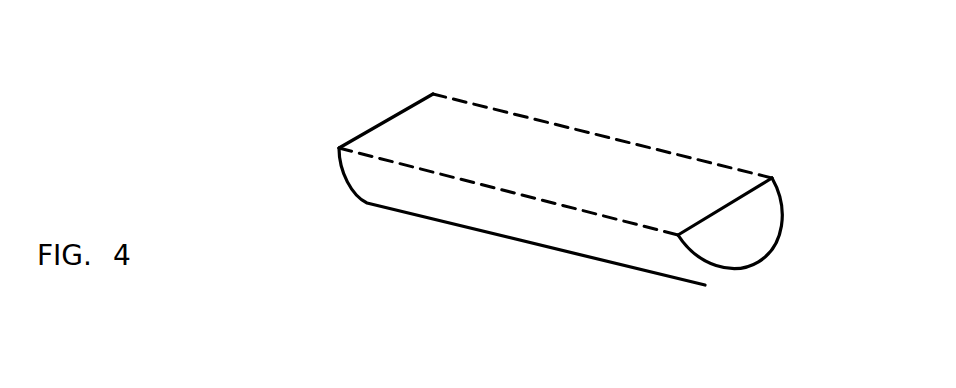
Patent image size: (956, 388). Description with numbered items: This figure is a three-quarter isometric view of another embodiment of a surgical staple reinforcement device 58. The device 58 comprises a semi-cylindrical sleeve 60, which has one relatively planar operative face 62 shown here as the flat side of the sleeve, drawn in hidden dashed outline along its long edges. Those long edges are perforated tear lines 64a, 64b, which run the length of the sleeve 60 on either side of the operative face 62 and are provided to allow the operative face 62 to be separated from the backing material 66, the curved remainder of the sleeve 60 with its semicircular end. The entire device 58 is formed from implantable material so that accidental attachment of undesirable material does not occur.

The reinforcement device 58 is at (576, 203).
The semi-cylindrical sleeve 60 is at (430, 198).
The operative face 62 is at (643, 178).
The perforated tear line 64a is at (590, 212).
The perforated tear line 64b is at (710, 163).
The backing material 66 is at (672, 265).